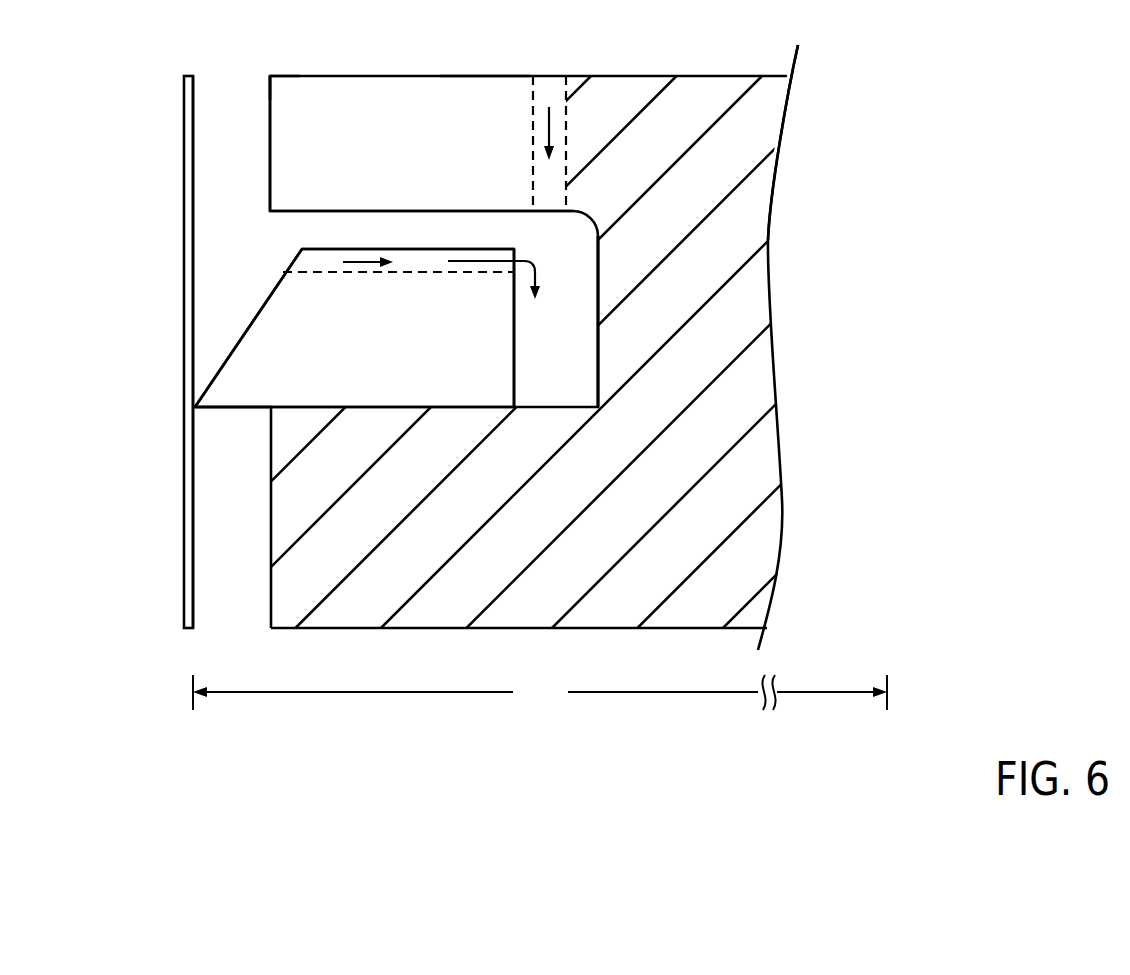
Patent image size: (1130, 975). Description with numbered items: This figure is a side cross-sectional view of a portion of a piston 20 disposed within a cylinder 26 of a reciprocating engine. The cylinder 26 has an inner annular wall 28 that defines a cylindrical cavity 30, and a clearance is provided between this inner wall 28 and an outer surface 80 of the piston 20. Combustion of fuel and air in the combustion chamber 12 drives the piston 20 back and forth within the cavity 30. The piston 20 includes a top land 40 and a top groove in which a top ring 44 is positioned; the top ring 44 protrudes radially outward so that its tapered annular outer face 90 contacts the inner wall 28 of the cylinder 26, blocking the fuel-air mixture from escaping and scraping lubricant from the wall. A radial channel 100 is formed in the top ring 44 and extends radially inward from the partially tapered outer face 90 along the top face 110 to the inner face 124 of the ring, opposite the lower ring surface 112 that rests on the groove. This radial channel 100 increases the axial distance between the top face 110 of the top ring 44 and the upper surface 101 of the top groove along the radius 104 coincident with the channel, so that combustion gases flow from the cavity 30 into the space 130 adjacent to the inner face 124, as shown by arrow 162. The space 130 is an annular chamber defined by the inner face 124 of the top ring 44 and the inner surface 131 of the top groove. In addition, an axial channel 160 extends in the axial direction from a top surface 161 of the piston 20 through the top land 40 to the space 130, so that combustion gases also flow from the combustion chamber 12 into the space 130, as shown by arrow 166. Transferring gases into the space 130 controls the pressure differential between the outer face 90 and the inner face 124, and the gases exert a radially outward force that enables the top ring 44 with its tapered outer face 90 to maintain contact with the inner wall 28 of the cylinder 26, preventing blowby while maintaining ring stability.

The combustion chamber 12 is at (435, 36).
The piston 20 is at (847, 90).
The cylinder 26 is at (183, 138).
The inner annular wall 28 is at (195, 120).
The cylindrical cavity 30 is at (232, 159).
The top land 40 is at (317, 90).
The top ring 44 is at (257, 372).
The outer surface of the piston 80 is at (270, 76).
The tapered annular outer face 90 is at (247, 328).
The radial channel 100 is at (313, 264).
The upper surface of the top groove 101 is at (336, 213).
The radius 104 is at (540, 692).
The top face of the top ring 110 is at (405, 248).
The lower surface of insert 112 is at (352, 407).
The inner face of the top ring 124 is at (514, 370).
The space 130 is at (590, 312).
The inner surface of the top groove 131 is at (598, 355).
The axial channel 160 is at (567, 123).
The top surface of the piston 161 is at (478, 76).
The arrow 162 is at (360, 262).
The arrow 166 is at (545, 128).